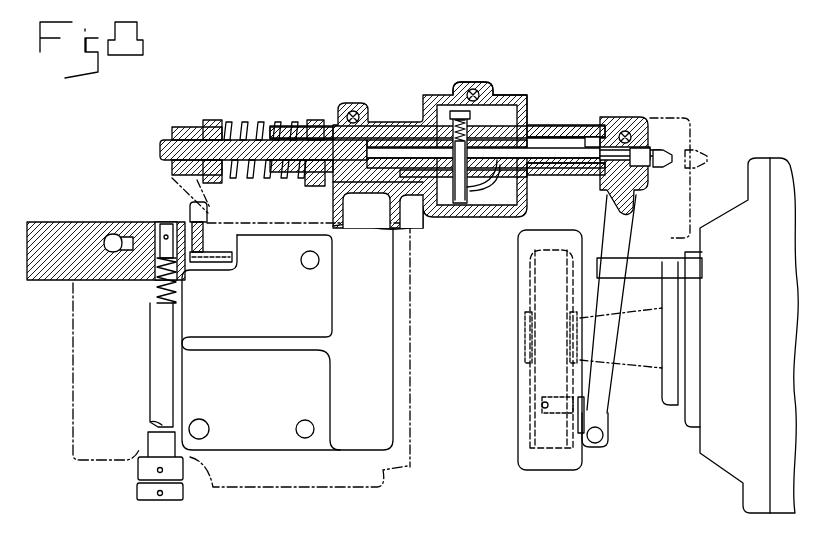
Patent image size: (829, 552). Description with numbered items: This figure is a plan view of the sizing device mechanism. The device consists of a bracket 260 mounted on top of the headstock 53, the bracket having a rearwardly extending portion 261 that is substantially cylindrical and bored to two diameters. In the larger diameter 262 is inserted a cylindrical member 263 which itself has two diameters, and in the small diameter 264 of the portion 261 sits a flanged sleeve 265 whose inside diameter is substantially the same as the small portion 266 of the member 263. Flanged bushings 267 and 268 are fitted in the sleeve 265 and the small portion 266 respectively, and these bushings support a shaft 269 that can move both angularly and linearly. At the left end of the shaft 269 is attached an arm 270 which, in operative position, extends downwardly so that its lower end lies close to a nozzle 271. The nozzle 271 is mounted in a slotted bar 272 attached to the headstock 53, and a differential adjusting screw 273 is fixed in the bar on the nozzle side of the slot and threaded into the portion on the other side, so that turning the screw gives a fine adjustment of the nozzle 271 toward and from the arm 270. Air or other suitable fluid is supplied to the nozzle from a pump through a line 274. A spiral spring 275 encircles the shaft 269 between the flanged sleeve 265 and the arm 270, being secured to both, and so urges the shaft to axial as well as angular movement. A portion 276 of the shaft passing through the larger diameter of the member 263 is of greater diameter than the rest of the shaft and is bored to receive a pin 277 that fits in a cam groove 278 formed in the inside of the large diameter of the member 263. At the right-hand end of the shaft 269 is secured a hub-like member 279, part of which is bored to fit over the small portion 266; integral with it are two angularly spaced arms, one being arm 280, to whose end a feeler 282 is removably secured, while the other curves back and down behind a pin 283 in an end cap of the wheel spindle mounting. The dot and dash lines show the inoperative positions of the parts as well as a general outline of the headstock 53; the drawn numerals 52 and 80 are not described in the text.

The bar 52 is at (535, 290).
The headstock 53 is at (410, 413).
The drum 80 is at (640, 362).
The bracket 260 is at (398, 452).
The rearwardly extending portion 261 is at (333, 203).
The larger diameter 262 is at (490, 97).
The cylindrical member 263 is at (527, 108).
The small diameter 264 is at (373, 122).
The flanged sleeve 265 is at (313, 127).
The small portion 266 is at (549, 127).
The flanged bushing 267 is at (288, 132).
The flanged bushing 268 is at (588, 137).
The shaft 269 is at (238, 140).
The arm 270 is at (170, 167).
The nozzle 271 is at (207, 225).
The slotted bar 272 is at (133, 212).
The differential adjusting screw 273 is at (155, 292).
The line 274 is at (228, 252).
The spiral spring 275 is at (230, 123).
The portion of shaft 276 is at (468, 128).
The pin 277 is at (458, 203).
The cam groove 278 is at (493, 217).
The hub-like member 279 is at (627, 120).
The arm 280 is at (630, 230).
The feeler 282 is at (580, 442).
The pin 283 is at (652, 252).